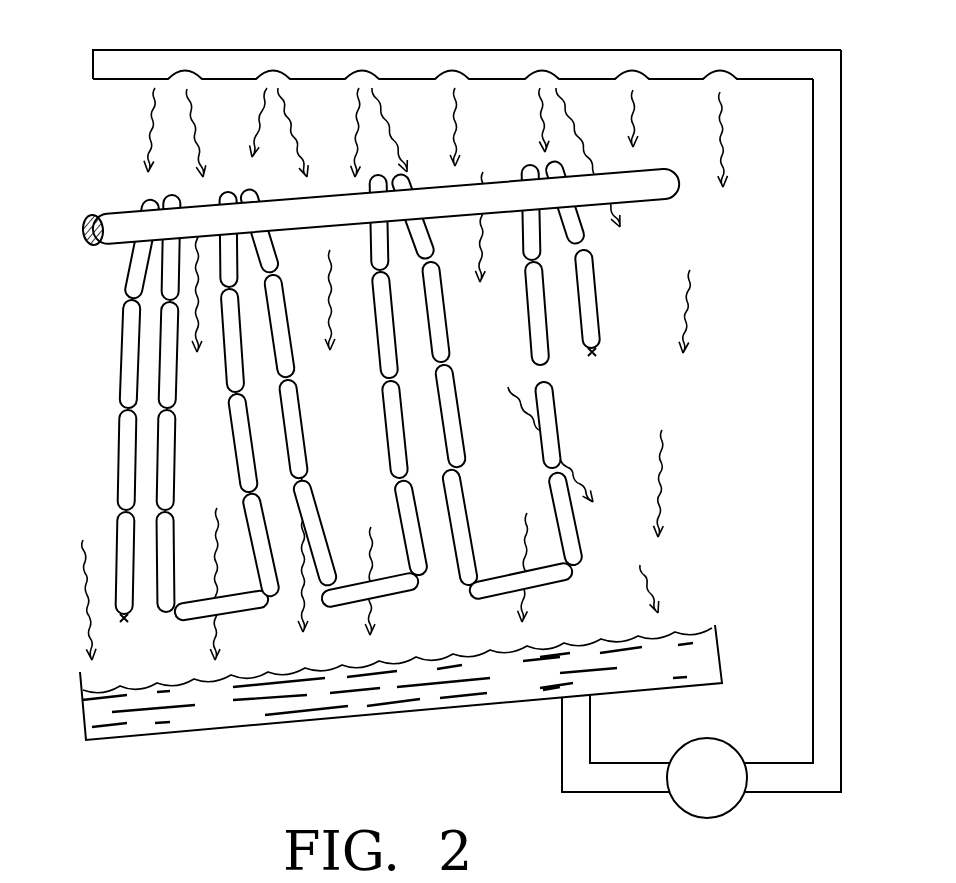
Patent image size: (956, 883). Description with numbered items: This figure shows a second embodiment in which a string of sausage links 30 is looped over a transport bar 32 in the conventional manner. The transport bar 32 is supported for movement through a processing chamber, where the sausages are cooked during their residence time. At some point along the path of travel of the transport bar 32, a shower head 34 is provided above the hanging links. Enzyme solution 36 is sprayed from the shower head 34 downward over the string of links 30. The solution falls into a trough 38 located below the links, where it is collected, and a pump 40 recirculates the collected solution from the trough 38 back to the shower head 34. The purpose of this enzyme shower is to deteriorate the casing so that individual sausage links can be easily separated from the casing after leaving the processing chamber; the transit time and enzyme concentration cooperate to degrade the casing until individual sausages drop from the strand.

The string of sausage links 30 is at (122, 356).
The transport bar 32 is at (112, 212).
The shower head 34 is at (661, 50).
The enzyme solution 36 is at (160, 131).
The trough 38 is at (82, 722).
The pump 40 is at (737, 805).